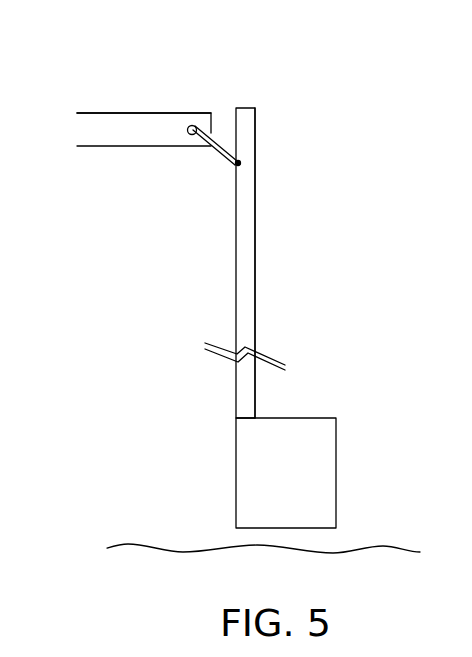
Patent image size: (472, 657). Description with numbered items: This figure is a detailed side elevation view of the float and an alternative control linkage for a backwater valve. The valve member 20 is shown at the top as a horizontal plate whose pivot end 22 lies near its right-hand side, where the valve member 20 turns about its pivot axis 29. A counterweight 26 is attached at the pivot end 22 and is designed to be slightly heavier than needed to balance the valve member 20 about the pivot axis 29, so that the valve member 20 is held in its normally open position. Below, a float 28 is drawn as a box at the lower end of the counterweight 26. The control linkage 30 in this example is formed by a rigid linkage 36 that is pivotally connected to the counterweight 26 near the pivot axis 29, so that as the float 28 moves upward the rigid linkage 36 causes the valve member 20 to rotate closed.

The valve member 20 is at (106, 113).
The pivot end 22 is at (165, 113).
The pivot axis 29 is at (199, 123).
The rigid linkage 36 is at (228, 156).
The counterweight 26 is at (236, 276).
The control linkage 30 is at (255, 257).
The float 28 is at (330, 468).